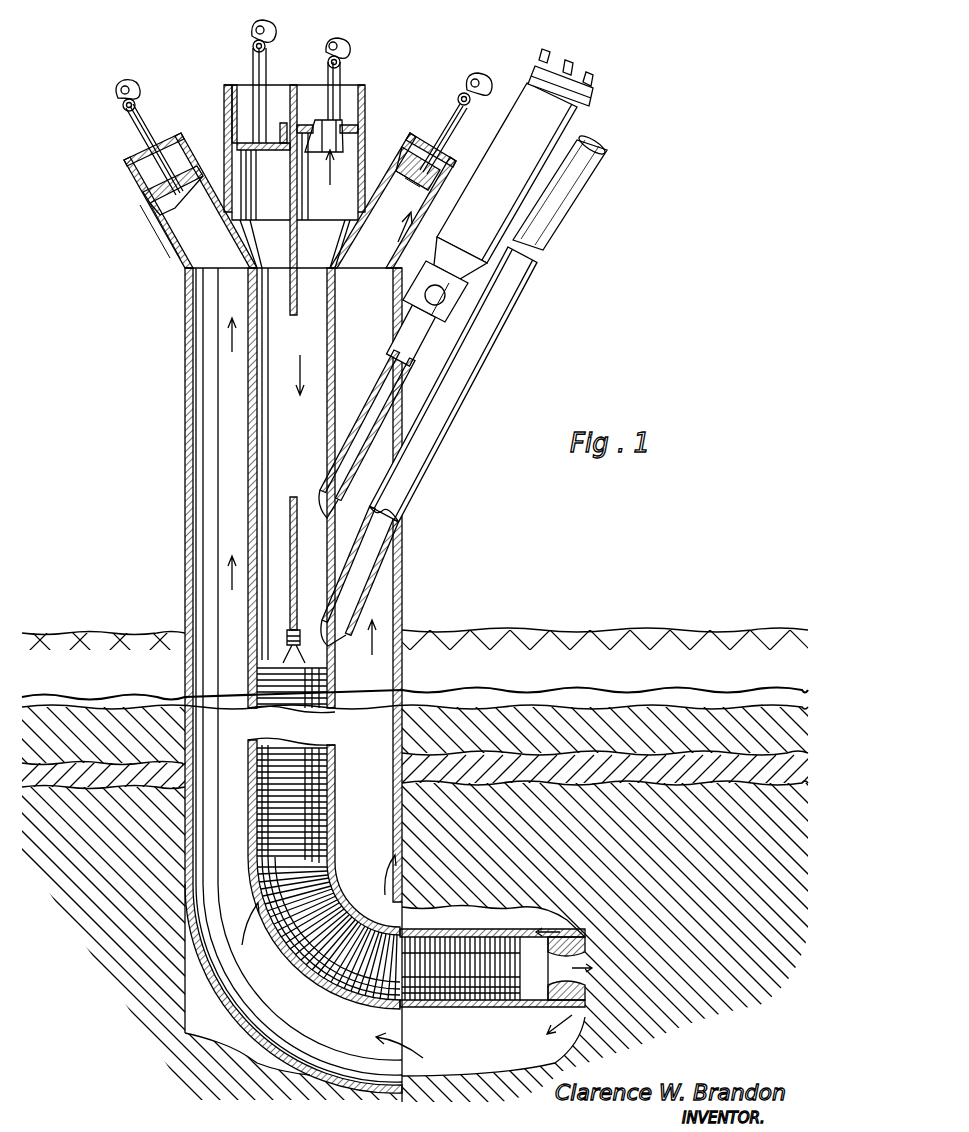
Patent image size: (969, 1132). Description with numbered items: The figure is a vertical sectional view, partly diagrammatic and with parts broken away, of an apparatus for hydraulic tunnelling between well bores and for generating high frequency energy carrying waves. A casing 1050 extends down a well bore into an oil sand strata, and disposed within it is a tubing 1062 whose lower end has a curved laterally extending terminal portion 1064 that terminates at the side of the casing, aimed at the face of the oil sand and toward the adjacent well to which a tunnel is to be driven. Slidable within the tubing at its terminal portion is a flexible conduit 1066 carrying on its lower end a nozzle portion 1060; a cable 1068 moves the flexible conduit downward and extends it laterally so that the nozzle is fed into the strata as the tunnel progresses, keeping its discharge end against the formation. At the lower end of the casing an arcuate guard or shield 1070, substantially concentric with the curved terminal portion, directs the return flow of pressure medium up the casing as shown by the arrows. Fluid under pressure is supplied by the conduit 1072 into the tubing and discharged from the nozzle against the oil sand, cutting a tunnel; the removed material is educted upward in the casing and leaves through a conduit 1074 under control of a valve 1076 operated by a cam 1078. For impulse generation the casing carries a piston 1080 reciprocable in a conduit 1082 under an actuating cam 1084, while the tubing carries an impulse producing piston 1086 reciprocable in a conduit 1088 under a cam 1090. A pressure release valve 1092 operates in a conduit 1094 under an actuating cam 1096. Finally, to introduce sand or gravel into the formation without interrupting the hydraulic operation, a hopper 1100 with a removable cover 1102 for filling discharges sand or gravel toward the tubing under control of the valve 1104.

The casing 1050 is at (185, 432).
The nozzle portion 1060 is at (547, 1010).
The tubing 1062 is at (253, 373).
The curved laterally extending terminal portion 1064 is at (320, 975).
The flexible conduit 1066 is at (305, 808).
The cable 1068 is at (294, 495).
The arcuate guard or shield 1070 is at (258, 1042).
The conduit 1072 is at (436, 428).
The conduit 1074 is at (374, 215).
The valve 1076 is at (423, 166).
The cam 1078 is at (485, 72).
The piston 1080 is at (180, 206).
The conduit 1082 is at (188, 248).
The actuating cam 1084 is at (121, 93).
The impulse producing piston 1086 is at (233, 128).
The conduit 1088 is at (226, 155).
The cam 1090 is at (250, 27).
The pressure release valve 1092 is at (340, 130).
The conduit 1094 is at (365, 88).
The cam 1096 is at (348, 44).
The hopper 1100 is at (537, 128).
The removable cover 1102 is at (574, 74).
The valve 1104 is at (425, 297).